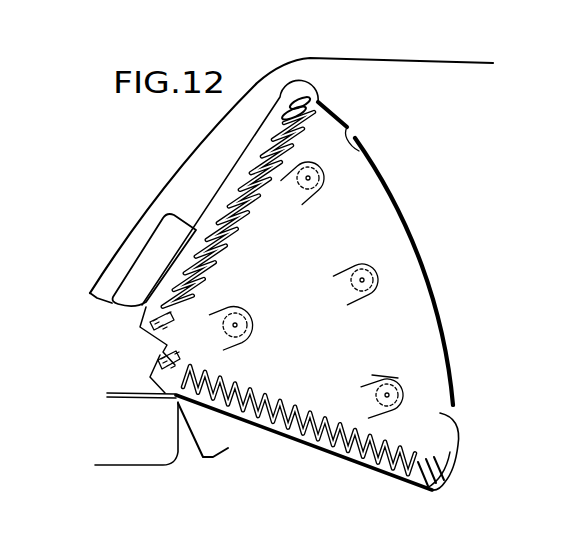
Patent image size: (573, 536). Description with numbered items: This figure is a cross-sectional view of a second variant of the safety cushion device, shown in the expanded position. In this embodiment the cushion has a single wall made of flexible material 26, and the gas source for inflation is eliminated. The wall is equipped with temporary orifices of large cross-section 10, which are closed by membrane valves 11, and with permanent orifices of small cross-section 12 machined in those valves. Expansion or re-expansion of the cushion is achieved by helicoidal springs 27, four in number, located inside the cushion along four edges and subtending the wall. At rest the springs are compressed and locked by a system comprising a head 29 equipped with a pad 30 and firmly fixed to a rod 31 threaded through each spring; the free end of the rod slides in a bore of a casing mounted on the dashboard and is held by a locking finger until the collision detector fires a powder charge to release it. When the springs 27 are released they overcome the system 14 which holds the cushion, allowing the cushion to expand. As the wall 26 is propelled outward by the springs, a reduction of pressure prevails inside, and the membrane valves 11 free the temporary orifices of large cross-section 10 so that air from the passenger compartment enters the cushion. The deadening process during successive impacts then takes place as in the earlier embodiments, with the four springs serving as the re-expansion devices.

The temporary orifices of large cross-section 10 is at (352, 133).
The membrane valves 11 is at (370, 157).
The permanent orifices of small cross-section 12 is at (364, 282).
The system which holds the cushion 14 is at (215, 459).
The single wall made of flexible material 26 is at (427, 277).
The helicoidal springs 27 is at (240, 222).
The head 29 is at (458, 455).
The pad 30 is at (447, 480).
The rod 31 is at (421, 486).